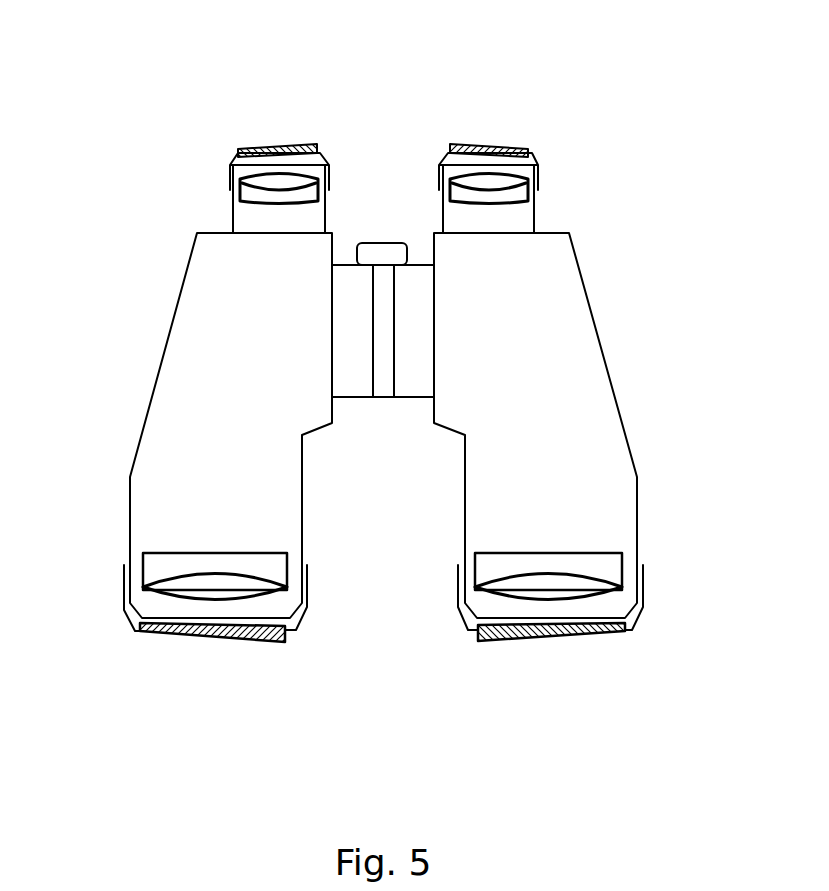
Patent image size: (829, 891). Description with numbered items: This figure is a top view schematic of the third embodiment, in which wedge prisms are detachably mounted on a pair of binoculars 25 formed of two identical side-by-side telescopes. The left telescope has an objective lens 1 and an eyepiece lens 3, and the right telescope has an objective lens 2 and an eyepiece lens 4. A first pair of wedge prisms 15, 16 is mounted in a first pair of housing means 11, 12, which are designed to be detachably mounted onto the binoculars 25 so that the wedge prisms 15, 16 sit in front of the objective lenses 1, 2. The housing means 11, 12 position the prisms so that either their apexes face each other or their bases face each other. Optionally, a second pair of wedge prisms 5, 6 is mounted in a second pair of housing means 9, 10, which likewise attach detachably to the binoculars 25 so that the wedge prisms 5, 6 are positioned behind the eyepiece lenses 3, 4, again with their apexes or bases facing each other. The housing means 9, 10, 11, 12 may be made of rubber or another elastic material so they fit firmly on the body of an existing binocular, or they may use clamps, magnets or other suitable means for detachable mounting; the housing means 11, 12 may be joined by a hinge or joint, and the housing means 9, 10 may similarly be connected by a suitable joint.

The objective lens 1 is at (143, 558).
The objective lens 2 is at (620, 553).
The eyepiece lens 3 is at (243, 190).
The eyepiece lens 4 is at (530, 195).
The wedge prism 5 is at (265, 150).
The wedge prism 6 is at (473, 147).
The housing means 9 is at (230, 160).
The housing means 10 is at (538, 165).
The housing means 11 is at (127, 602).
The housing means 12 is at (645, 597).
The wedge prism 15 is at (247, 640).
The wedge prism 16 is at (508, 640).
The binoculars 25 is at (157, 373).